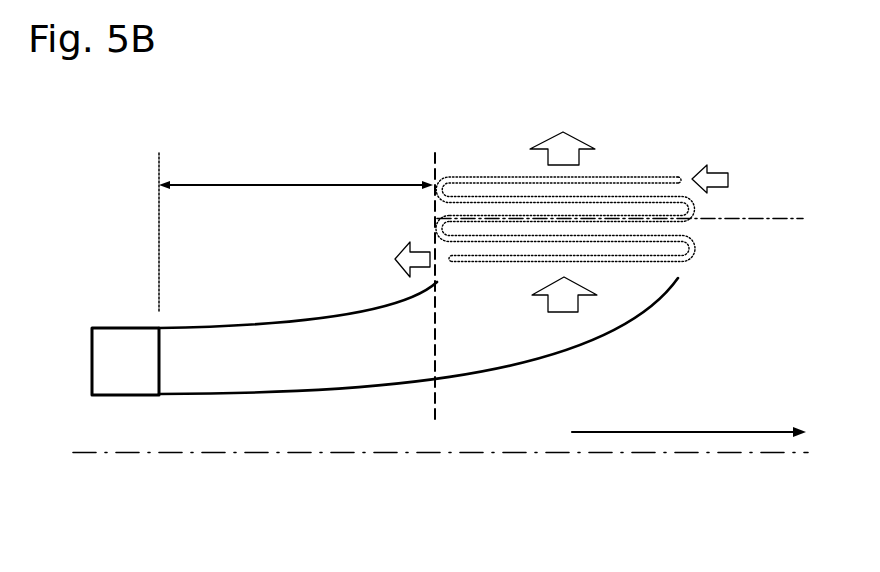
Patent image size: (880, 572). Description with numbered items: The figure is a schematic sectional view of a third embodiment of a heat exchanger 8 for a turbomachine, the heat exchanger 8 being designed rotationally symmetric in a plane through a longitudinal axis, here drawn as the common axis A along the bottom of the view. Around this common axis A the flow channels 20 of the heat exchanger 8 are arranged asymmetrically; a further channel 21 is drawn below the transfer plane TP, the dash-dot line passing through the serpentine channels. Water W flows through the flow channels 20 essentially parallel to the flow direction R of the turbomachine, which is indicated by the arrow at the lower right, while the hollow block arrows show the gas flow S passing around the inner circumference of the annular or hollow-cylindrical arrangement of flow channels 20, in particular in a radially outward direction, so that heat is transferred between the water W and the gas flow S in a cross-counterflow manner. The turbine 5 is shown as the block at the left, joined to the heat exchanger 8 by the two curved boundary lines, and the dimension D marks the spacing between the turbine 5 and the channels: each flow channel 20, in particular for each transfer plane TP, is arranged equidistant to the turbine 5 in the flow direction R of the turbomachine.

The turbine 5 is at (125, 340).
The heat exchanger 8 is at (380, 430).
The flow channel 20 is at (485, 178).
The second heat exchanger tube 21 is at (471, 241).
The transfer plane TP is at (763, 218).
The gas flow S is at (570, 145).
The water W is at (720, 175).
The flow direction R is at (675, 430).
The common axis A is at (180, 455).
The distance D is at (296, 168).